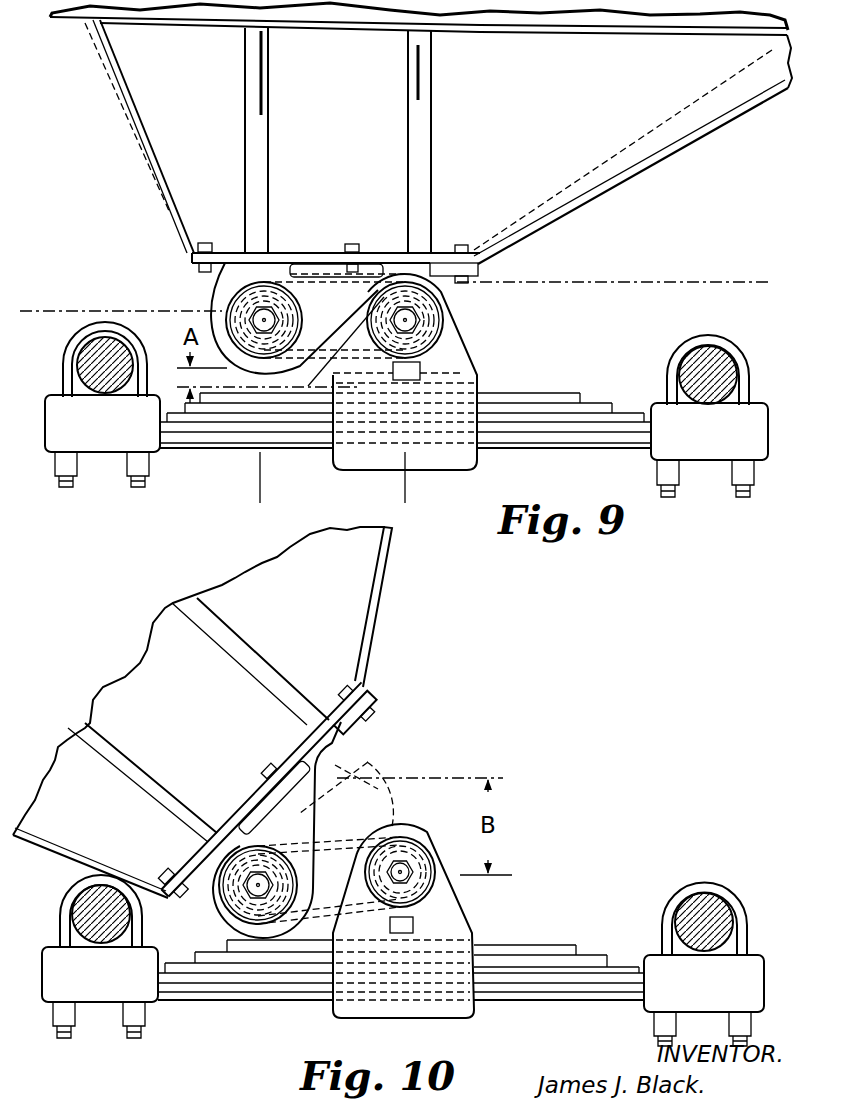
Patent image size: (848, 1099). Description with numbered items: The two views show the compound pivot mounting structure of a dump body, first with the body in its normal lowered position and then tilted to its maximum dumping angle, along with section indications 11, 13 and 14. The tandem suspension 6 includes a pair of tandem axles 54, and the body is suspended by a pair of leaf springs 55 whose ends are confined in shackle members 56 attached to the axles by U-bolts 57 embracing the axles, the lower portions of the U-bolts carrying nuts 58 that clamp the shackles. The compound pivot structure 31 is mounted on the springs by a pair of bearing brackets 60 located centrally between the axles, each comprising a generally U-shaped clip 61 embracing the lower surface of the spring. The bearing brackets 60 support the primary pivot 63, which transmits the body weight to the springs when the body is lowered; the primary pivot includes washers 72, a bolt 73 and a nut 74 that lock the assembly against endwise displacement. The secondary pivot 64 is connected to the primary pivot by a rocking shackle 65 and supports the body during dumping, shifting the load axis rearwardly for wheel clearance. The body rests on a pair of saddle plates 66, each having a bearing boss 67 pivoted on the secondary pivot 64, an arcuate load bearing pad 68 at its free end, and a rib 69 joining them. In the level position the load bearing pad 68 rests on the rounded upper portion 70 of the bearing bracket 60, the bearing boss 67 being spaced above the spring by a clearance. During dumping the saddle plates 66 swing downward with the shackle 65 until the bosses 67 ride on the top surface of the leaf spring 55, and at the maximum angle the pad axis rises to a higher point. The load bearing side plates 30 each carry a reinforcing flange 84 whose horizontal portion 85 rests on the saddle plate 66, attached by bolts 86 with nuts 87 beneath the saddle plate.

In FIG. 9, the tandem suspension 6 is at (346, 474).
In FIG. 10, the tandem suspension 6 is at (320, 1028).
In FIG. 9, the section line 11 is at (30, 346).
In FIG. 9, the section line 13 is at (384, 55).
In FIG. 9, the section line 14 is at (228, 53).
In FIG. 9, the load bearing side plate 30 is at (691, 121).
In FIG. 10, the load bearing side plate 30 is at (368, 563).
In FIG. 9, the compound pivot structure 31 is at (418, 264).
In FIG. 10, the compound pivot structure 31 is at (404, 813).
In FIG. 9, the tandem axle 54 is at (78, 343).
In FIG. 10, the tandem axle 54 is at (93, 900).
In FIG. 9, the leaf spring 55 is at (571, 423).
In FIG. 10, the leaf spring 55 is at (571, 980).
In FIG. 9, the shackle member 56 is at (53, 415).
In FIG. 10, the shackle member 56 is at (60, 973).
In FIG. 9, the U-bolt 57 is at (67, 365).
In FIG. 10, the U-bolt 57 is at (60, 911).
In FIG. 9, the nut 58 is at (67, 463).
In FIG. 10, the nut 58 is at (67, 1008).
In FIG. 9, the bearing bracket 60 is at (477, 365).
In FIG. 10, the bearing bracket 60 is at (448, 927).
In FIG. 9, the U-shaped clip 61 is at (457, 458).
In FIG. 10, the U-shaped clip 61 is at (437, 1000).
In FIG. 9, the primary pivot 63 is at (420, 326).
In FIG. 10, the primary pivot 63 is at (420, 880).
In FIG. 9, the secondary pivot 64 is at (267, 305).
In FIG. 10, the secondary pivot 64 is at (243, 880).
In FIG. 9, the rocking shackle 65 is at (327, 352).
In FIG. 10, the rocking shackle 65 is at (320, 916).
In FIG. 9, the saddle plate 66 is at (369, 264).
In FIG. 10, the saddle plate 66 is at (250, 811).
In FIG. 9, the bearing boss 67 is at (230, 310).
In FIG. 10, the bearing boss 67 is at (230, 925).
In FIG. 9, the load bearing pad 68 is at (446, 261).
In FIG. 10, the load bearing pad 68 is at (325, 723).
In FIG. 9, the rib 69 is at (334, 278).
In FIG. 10, the rib 69 is at (300, 796).
In FIG. 9, the rounded upper portion 70 is at (441, 279).
In FIG. 10, the rounded upper portion 70 is at (410, 832).
In FIG. 9, the washer 72 is at (452, 296).
In FIG. 10, the washer 72 is at (260, 852).
In FIG. 9, the bolt 73 is at (260, 321).
In FIG. 10, the bolt 73 is at (413, 871).
In FIG. 9, the nut 74 is at (450, 339).
In FIG. 10, the nut 74 is at (420, 866).
In FIG. 9, the reinforcing flange 84 is at (624, 181).
In FIG. 10, the reinforcing flange 84 is at (378, 617).
In FIG. 9, the horizontal portion 85 is at (316, 252).
In FIG. 10, the horizontal portion 85 is at (290, 753).
In FIG. 9, the bolt 86 is at (205, 243).
In FIG. 10, the bolt 86 is at (340, 691).
In FIG. 9, the nut 87 is at (199, 268).
In FIG. 10, the nut 87 is at (363, 701).